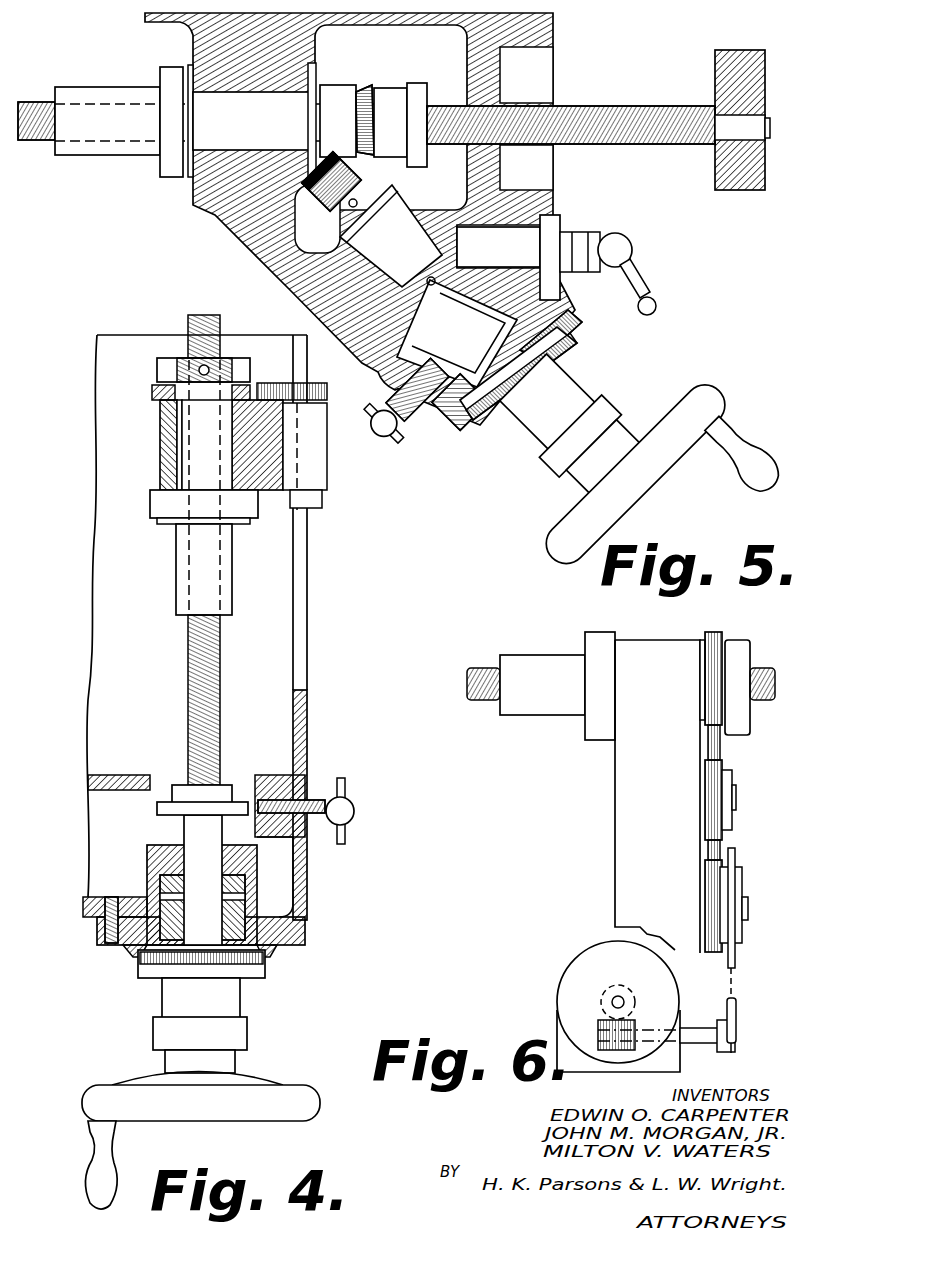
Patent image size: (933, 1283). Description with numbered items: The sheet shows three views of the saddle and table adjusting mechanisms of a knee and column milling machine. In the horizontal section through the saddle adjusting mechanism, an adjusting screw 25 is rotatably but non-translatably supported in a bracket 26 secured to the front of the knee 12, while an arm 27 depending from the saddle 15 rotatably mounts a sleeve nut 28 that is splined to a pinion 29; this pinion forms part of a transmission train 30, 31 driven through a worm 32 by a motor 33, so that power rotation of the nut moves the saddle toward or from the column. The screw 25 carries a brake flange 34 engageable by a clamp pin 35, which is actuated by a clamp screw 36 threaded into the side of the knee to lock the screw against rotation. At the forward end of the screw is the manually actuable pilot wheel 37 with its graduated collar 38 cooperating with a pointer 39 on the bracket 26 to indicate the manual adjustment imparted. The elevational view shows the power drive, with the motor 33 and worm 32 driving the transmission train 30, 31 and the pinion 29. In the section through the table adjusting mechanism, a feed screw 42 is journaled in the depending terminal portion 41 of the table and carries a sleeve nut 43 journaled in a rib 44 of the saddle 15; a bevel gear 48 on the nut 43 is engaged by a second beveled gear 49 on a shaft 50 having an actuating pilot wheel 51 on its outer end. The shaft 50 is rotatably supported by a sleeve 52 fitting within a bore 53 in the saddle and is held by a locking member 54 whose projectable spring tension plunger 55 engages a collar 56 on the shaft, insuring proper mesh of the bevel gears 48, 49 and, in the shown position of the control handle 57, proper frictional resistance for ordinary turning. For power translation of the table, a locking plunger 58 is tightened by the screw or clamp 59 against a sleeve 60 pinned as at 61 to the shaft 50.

In FIG. 4, the knee 12 is at (306, 908).
In FIG. 5, the saddle 15 is at (553, 29).
In FIG. 4, the adjusting screw 25 is at (182, 828).
In FIG. 4, the bracket 26 is at (258, 882).
In FIG. 4, the arm 27 is at (160, 452).
In FIG. 4, the sleeve nut 28 is at (180, 427).
In FIG. 4, the pinion 29 is at (152, 390).
In FIG. 6, the pinion 29 is at (720, 632).
In FIG. 6, the transmission train 30 is at (720, 790).
In FIG. 6, the transmission train 31 is at (722, 857).
In FIG. 6, the worm 32 is at (597, 1022).
In FIG. 6, the motor 33 is at (597, 947).
In FIG. 4, the brake flange 34 is at (157, 808).
In FIG. 4, the clamp pin 35 is at (293, 770).
In FIG. 4, the clamp screw 36 is at (318, 800).
In FIG. 4, the pilot wheel 37 is at (320, 1108).
In FIG. 4, the graduated collar 38 is at (265, 972).
In FIG. 4, the pointer 39 is at (133, 950).
In FIG. 5, the depending terminal portion 41 is at (732, 190).
In FIG. 5, the feed screw 42 is at (627, 107).
In FIG. 5, the sleeve nut 43 is at (112, 88).
In FIG. 5, the rib 44 is at (318, 38).
In FIG. 5, the bevel gear 48 is at (354, 93).
In FIG. 5, the second beveled gear 49 is at (267, 230).
In FIG. 5, the shaft 50 is at (423, 208).
In FIG. 5, the actuating pilot wheel 51 is at (710, 397).
In FIG. 5, the sleeve 52 is at (465, 420).
In FIG. 5, the bore 53 is at (566, 310).
In FIG. 5, the locking member 54 is at (552, 230).
In FIG. 5, the spring tension plunger 55 is at (505, 192).
In FIG. 5, the collar 56 is at (290, 286).
In FIG. 5, the control handle 57 is at (643, 280).
In FIG. 5, the locking plunger 58 is at (416, 401).
In FIG. 5, the screw or clamp 59 is at (408, 423).
In FIG. 5, the sleeve 60 is at (362, 346).
In FIG. 5, the pin 61 is at (320, 312).